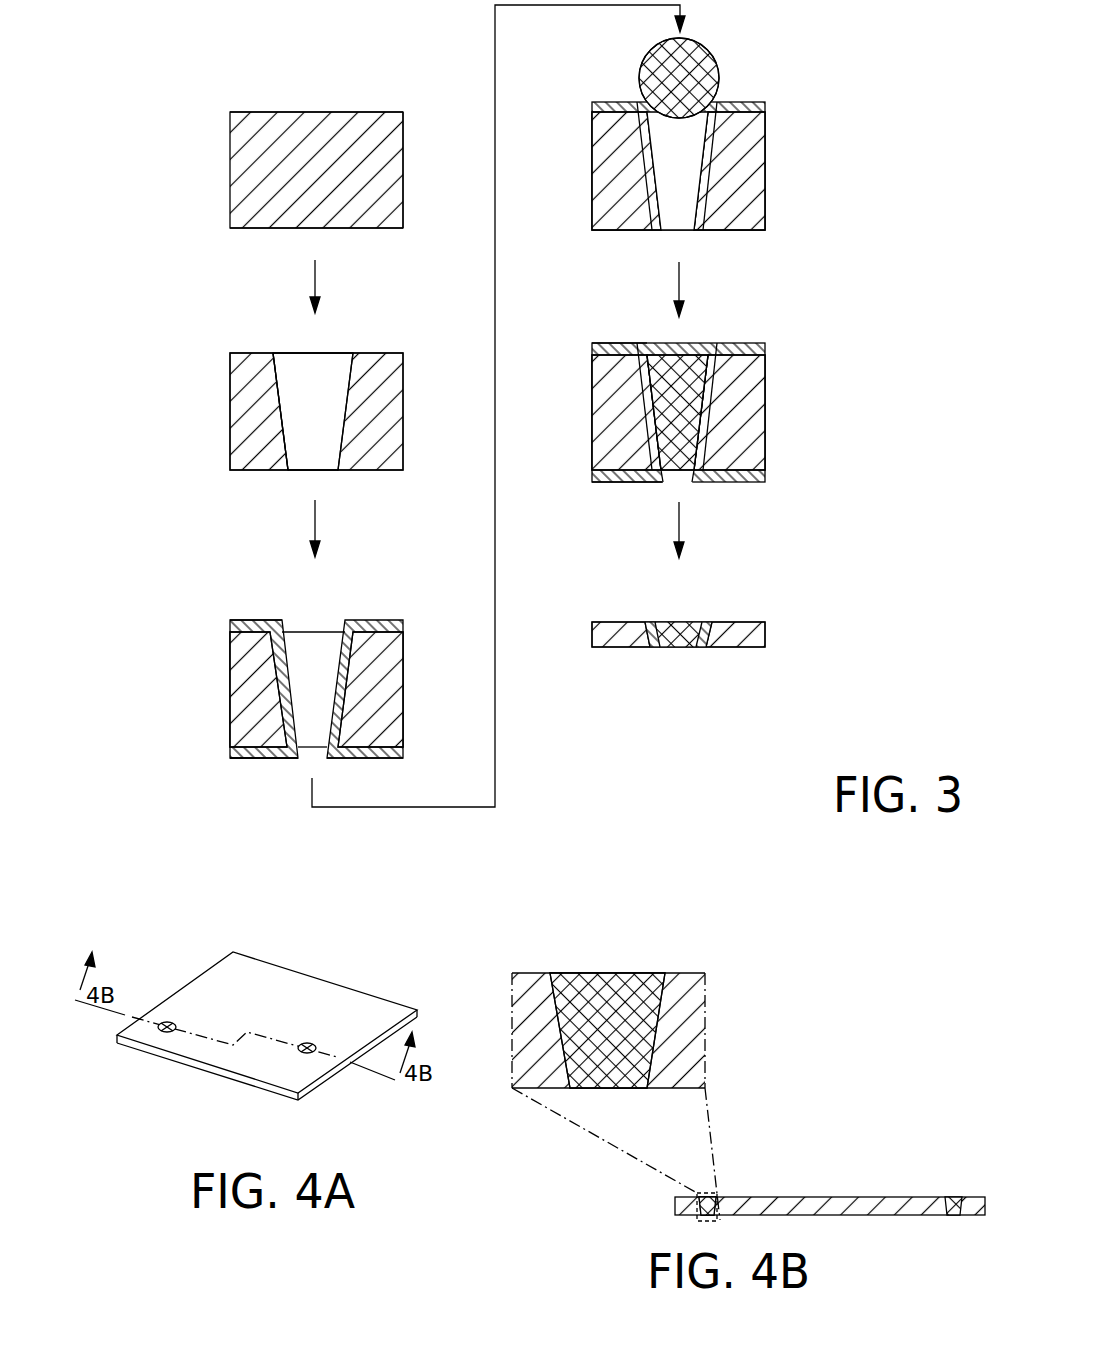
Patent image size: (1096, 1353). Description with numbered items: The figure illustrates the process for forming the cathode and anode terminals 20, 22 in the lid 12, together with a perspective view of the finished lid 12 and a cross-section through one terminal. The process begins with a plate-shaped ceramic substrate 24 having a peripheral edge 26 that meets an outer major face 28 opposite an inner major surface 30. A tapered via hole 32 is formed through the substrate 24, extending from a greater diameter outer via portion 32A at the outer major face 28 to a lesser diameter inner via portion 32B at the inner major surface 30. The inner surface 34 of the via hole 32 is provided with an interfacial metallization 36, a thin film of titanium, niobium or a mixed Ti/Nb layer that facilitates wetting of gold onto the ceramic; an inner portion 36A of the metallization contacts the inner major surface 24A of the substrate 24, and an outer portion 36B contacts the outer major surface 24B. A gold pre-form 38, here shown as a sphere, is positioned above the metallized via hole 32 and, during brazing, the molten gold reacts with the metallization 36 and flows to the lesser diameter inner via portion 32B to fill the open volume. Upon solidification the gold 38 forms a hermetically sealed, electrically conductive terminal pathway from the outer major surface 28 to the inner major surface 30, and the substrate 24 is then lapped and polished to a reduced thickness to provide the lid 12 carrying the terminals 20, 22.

In FIG. 3, the lid 12 is at (750, 622).
In FIG. 4A, the lid 12 is at (324, 942).
In FIG. 4B, the lid 12 is at (805, 1197).
In FIG. 4A, the cathode terminal 20 is at (314, 1045).
In FIG. 4B, the cathode terminal 20 is at (954, 1197).
In FIG. 4A, the anode terminal 22 is at (167, 1022).
In FIG. 4B, the anode terminal 22 is at (699, 1174).
In FIG. 3, the ceramic substrate 24 is at (230, 147).
In FIG. 3, the peripheral edge 26 is at (403, 128).
In FIG. 3, the outer major face 28 is at (265, 112).
In FIG. 3, the inner major surface 30 is at (247, 228).
In FIG. 3, the tapered via hole 32 is at (335, 375).
In FIG. 4B, the tapered via hole 32 is at (662, 1057).
In FIG. 3, the outer via portion 32A is at (287, 353).
In FIG. 3, the inner via portion 32B is at (333, 470).
In FIG. 3, the inner surface 34 is at (297, 410).
In FIG. 3, the interfacial metallization 36 is at (275, 695).
In FIG. 3, the inner portion of the metallization 36A is at (260, 758).
In FIG. 3, the outer portion of the metallization 36B is at (255, 620).
In FIG. 3, the inner major surface 24A is at (403, 739).
In FIG. 3, the outer major surface 24B is at (375, 618).
In FIG. 3, the gold pre-form 38 is at (712, 68).
In FIG. 4B, the gold pre-form 38 is at (640, 1000).